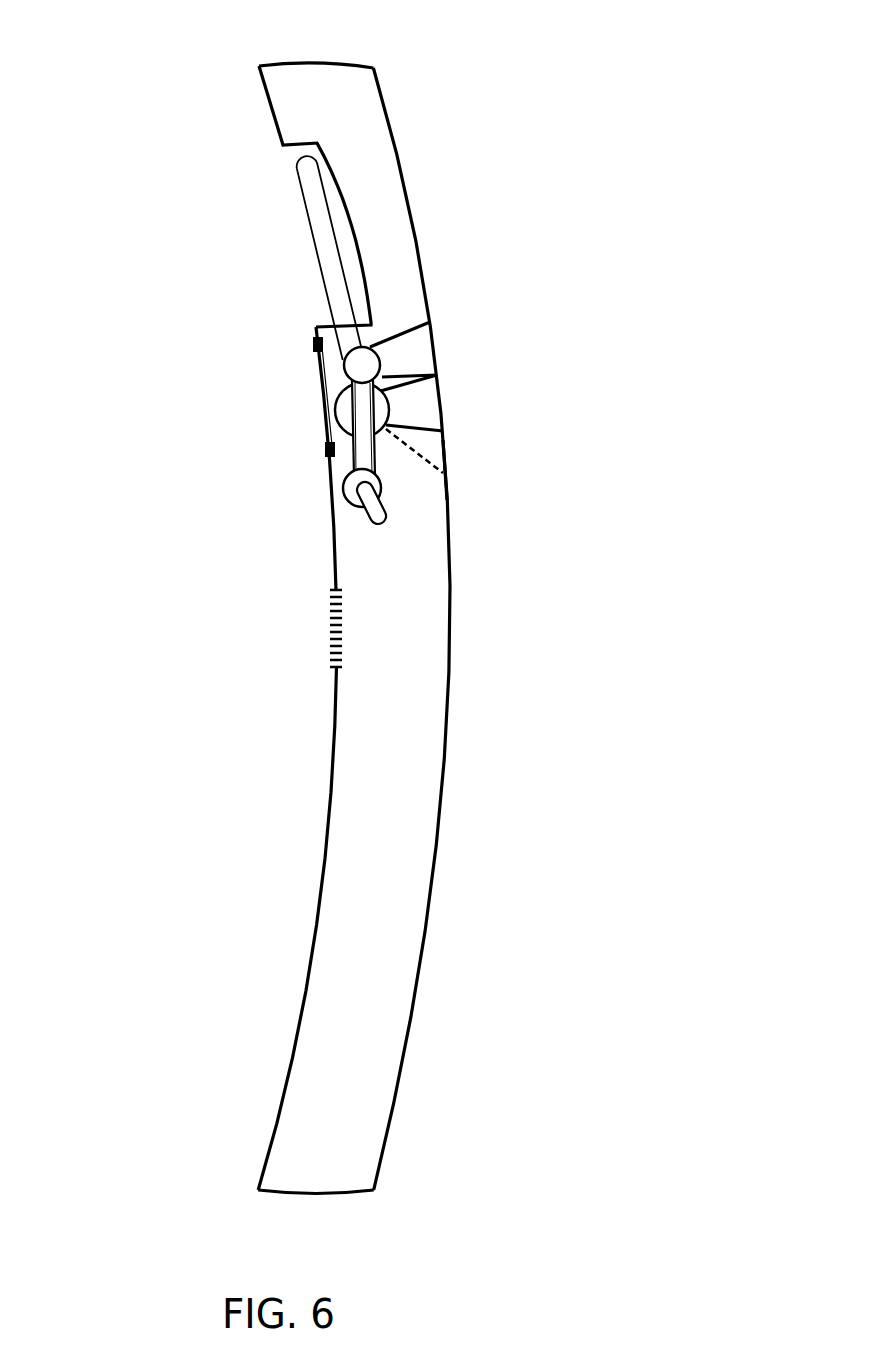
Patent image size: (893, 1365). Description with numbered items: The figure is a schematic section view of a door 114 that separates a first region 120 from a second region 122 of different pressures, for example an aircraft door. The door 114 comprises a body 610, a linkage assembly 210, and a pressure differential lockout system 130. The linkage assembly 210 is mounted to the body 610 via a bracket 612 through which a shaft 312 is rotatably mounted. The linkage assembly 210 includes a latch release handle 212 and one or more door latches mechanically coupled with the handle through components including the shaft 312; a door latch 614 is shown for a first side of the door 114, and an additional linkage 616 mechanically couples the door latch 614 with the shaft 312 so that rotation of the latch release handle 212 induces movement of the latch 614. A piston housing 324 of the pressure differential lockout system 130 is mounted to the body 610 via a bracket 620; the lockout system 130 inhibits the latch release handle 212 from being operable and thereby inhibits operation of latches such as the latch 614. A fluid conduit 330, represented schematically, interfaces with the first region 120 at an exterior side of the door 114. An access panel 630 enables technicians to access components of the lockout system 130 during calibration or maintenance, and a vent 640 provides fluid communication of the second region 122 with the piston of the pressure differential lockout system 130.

The door 114 is at (414, 61).
The first region 120 is at (447, 474).
The second region 122 is at (258, 623).
The pressure differential lockout system 130 is at (303, 448).
The linkage assembly 210 is at (253, 316).
The latch release handle 212 is at (318, 218).
The shaft 312 is at (350, 367).
The piston housing 324 is at (345, 418).
The fluid conduit 330 is at (420, 457).
The body 610 is at (330, 797).
The bracket 612 is at (418, 351).
The door latch 614 is at (376, 517).
The additional linkage 616 is at (358, 462).
The bracket 620 is at (412, 405).
The access panel 630 is at (328, 392).
The vent 640 is at (337, 618).